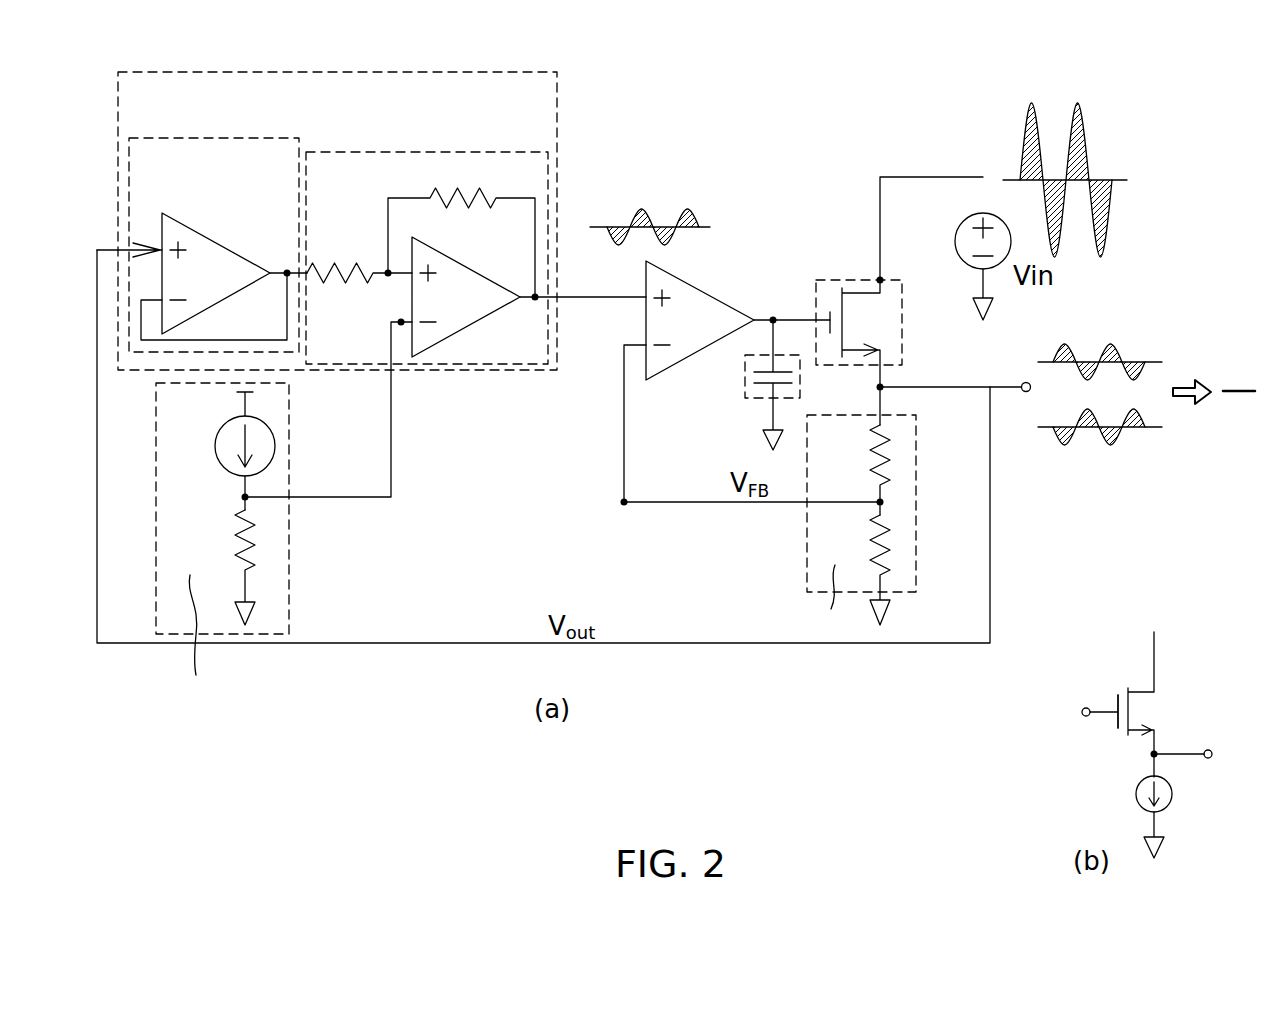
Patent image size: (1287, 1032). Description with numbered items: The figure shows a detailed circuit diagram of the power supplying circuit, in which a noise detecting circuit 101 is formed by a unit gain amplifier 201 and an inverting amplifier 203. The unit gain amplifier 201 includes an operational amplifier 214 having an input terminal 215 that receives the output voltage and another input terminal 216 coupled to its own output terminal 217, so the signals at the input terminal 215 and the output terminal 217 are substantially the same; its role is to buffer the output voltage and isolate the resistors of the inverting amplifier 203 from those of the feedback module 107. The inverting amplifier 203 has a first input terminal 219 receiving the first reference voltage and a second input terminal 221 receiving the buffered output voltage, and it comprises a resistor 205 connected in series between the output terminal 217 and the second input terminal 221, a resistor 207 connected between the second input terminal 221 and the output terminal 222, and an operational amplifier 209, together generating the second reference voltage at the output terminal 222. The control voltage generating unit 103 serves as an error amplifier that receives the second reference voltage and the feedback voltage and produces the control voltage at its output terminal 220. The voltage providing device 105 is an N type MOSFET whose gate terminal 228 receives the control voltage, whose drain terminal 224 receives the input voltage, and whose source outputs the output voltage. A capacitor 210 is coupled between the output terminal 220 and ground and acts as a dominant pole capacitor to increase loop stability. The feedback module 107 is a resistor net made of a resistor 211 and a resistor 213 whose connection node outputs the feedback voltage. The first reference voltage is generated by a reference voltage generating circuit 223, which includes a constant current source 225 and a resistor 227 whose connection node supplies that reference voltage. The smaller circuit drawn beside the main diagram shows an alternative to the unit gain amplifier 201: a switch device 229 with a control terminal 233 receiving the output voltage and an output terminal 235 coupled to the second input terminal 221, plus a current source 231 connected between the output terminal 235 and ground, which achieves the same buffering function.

The noise detecting circuit 101 is at (557, 125).
The control voltage generating unit 103 is at (700, 288).
The voltage providing device 105 is at (820, 282).
The feedback module 107 is at (807, 562).
The unit gain amplifier 201 is at (156, 137).
The inverting amplifier 203 is at (516, 152).
The resistor 205 is at (339, 263).
The resistor 207 is at (470, 208).
The operational amplifier 209 is at (490, 313).
The capacitor 210 is at (745, 378).
The resistor 211 is at (880, 452).
The resistor 213 is at (880, 547).
The operational amplifier 214 is at (240, 283).
The input terminal 215 is at (109, 250).
The input terminal 216 is at (141, 320).
The output terminal 217 is at (287, 268).
The first input terminal 219 is at (402, 325).
The output terminal 220 is at (773, 316).
The second input terminal 221 is at (388, 276).
The output terminal 222 is at (536, 300).
The reference voltage generating circuit 223 is at (289, 578).
The drain terminal 224 is at (882, 278).
The constant current source 225 is at (215, 446).
The resistor 227 is at (255, 530).
The gate terminal 228 is at (826, 322).
The switch device 229 is at (1156, 710).
The current source 231 is at (1136, 793).
The control terminal 233 is at (1116, 700).
The output terminal 235 is at (1150, 754).